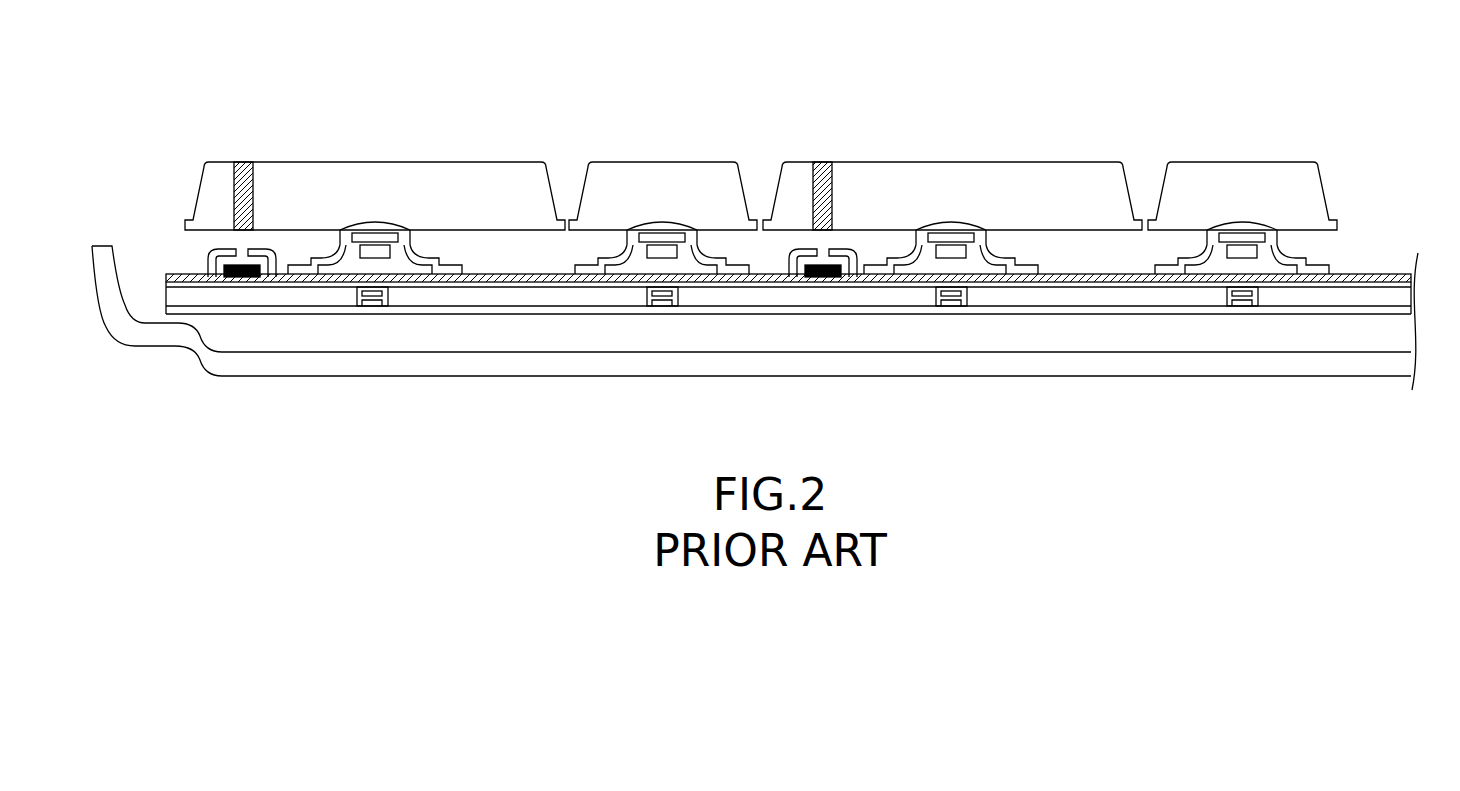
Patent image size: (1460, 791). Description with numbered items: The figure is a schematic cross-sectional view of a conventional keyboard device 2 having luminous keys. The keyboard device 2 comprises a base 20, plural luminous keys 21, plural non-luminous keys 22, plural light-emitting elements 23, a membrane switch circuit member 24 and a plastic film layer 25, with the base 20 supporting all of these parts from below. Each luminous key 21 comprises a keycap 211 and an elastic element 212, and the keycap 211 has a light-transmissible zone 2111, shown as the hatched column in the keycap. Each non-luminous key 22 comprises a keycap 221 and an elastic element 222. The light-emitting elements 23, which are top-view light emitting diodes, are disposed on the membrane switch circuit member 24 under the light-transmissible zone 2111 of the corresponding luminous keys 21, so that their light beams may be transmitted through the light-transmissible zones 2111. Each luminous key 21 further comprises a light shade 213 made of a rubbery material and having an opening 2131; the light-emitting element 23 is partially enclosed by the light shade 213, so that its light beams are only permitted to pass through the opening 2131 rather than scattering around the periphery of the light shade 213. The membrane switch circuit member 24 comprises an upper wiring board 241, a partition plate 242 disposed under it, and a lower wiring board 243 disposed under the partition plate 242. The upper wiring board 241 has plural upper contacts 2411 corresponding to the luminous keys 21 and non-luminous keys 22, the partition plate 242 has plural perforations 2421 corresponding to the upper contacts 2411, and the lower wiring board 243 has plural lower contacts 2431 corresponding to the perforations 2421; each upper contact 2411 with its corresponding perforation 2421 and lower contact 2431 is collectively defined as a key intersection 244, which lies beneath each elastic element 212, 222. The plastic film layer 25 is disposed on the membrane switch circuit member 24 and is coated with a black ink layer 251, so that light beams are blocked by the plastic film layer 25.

The keyboard device 2 is at (1282, 48).
The base 20 is at (985, 363).
The luminous key 21 is at (617, 173).
The keycap 211 is at (382, 175).
The light-transmissible zone 2111 is at (250, 162).
The elastic element 212 is at (428, 259).
The light shade 213 is at (205, 255).
The opening 2131 is at (243, 255).
The non-luminous key 22 is at (961, 185).
The keycap 221 is at (662, 175).
The elastic element 222 is at (717, 258).
The light-emitting element 23 is at (222, 281).
The membrane switch circuit member 24 is at (788, 378).
The upper wiring board 241 is at (1283, 285).
The partition plate 242 is at (1287, 298).
The lower wiring board 243 is at (1280, 310).
The key intersection 244 is at (764, 380).
The upper contact 2411 is at (387, 293).
The perforation 2421 is at (378, 291).
The lower contact 2431 is at (460, 425).
The plastic film layer 25 is at (788, 253).
The black ink layer 251 is at (1365, 272).